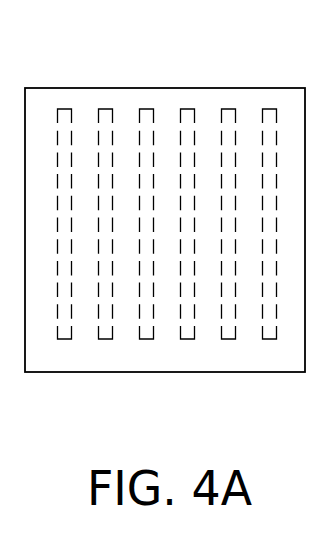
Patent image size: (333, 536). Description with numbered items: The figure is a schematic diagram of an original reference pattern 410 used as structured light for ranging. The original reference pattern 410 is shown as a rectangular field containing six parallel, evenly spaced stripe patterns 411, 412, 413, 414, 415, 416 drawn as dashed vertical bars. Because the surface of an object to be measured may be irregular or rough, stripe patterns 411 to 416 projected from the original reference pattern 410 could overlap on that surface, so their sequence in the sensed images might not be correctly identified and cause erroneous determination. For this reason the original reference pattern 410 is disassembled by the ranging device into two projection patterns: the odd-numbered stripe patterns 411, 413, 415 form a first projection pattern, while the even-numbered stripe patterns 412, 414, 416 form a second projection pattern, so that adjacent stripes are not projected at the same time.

The original reference pattern 410 is at (166, 87).
The stripe pattern 411 is at (64, 340).
The stripe pattern 412 is at (105, 340).
The stripe pattern 413 is at (147, 340).
The stripe pattern 414 is at (187, 340).
The stripe pattern 415 is at (228, 340).
The stripe pattern 416 is at (268, 340).